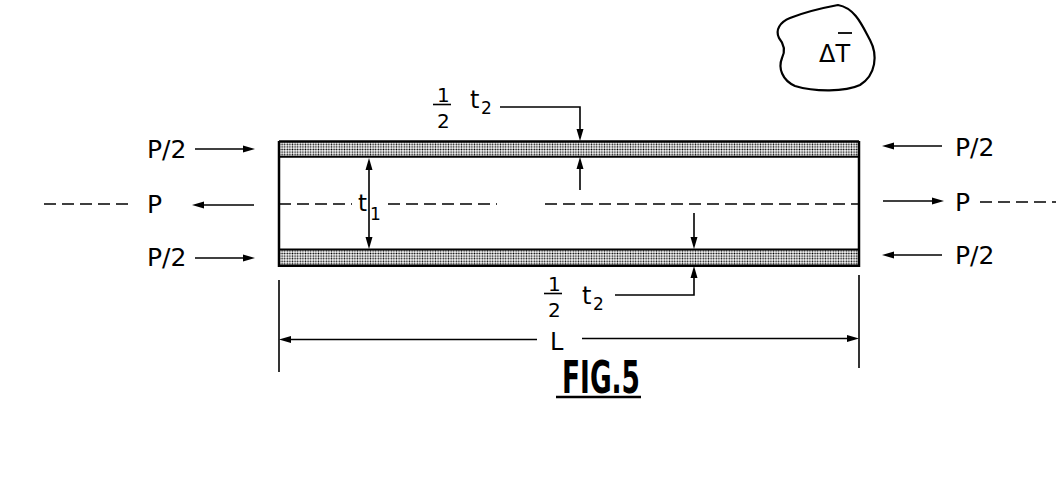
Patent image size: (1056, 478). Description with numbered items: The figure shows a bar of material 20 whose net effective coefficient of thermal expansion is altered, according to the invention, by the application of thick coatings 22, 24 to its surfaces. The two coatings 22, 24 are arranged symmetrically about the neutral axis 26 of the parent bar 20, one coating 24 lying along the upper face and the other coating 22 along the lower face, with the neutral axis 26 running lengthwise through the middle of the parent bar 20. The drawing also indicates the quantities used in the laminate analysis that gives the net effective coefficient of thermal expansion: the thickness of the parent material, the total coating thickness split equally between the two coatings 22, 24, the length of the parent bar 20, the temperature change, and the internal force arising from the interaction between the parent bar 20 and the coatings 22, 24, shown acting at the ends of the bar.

The bar of material 20 is at (537, 216).
The thick coating 22 is at (740, 266).
The thick coating 24 is at (688, 141).
The neutral axis 26 is at (110, 204).